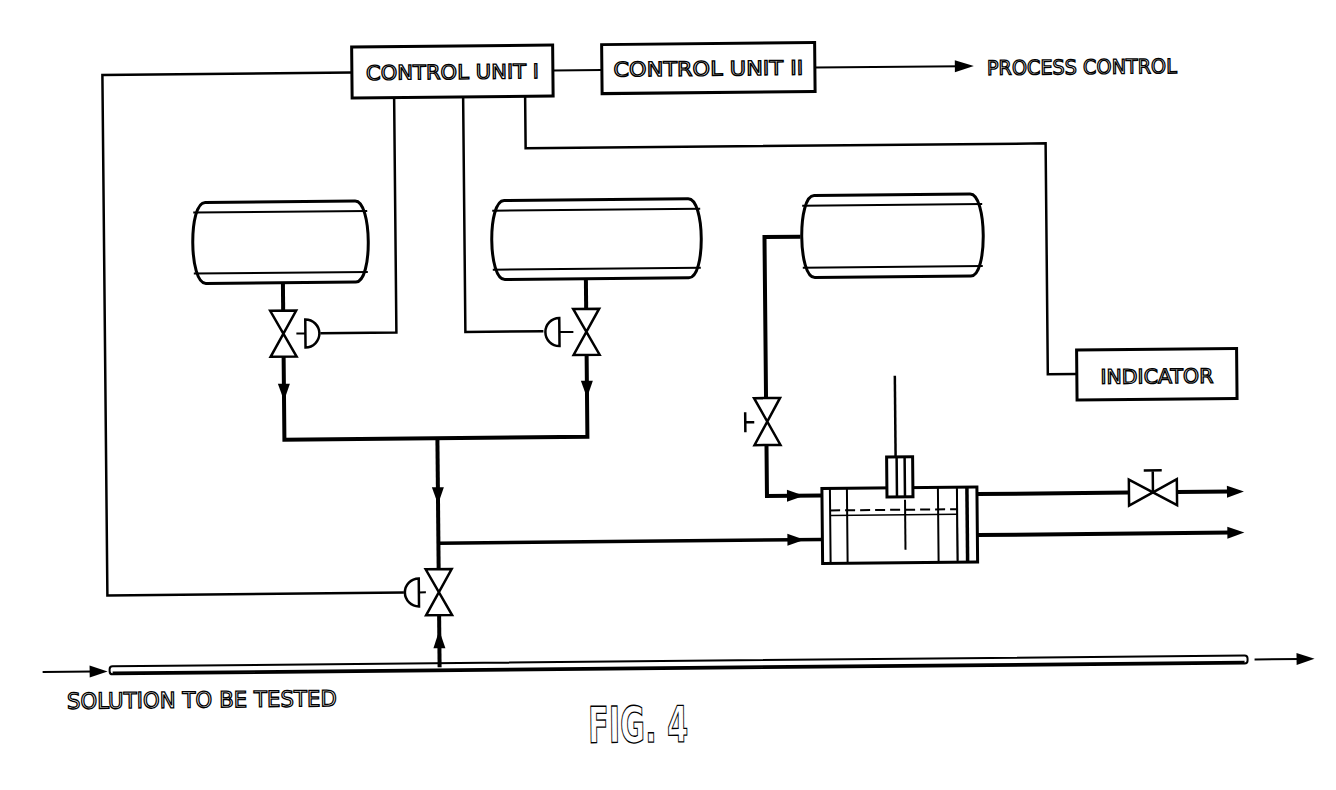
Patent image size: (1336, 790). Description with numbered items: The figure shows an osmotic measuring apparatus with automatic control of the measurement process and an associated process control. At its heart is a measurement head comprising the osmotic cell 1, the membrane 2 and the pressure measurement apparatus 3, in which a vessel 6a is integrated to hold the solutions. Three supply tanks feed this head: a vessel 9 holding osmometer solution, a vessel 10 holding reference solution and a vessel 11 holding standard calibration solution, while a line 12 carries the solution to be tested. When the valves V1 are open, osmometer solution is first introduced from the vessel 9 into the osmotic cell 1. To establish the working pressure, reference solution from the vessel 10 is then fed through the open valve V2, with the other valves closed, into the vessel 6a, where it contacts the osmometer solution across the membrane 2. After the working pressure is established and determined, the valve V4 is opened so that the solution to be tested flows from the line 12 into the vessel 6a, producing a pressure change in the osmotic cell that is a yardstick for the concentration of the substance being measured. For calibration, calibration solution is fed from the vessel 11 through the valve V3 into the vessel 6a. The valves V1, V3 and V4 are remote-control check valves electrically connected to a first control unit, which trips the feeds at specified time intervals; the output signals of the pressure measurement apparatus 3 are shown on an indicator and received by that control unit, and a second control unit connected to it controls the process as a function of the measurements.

The osmotic cell 1 is at (920, 498).
The membrane 2 is at (958, 478).
The pressure measurement apparatus 3 is at (910, 462).
The vessel 6a is at (922, 552).
The vessel 9 is at (900, 209).
The vessel 10 is at (624, 211).
The vessel 11 is at (288, 207).
The line 12 is at (1088, 664).
The valve V1 is at (777, 406).
The valve V2 is at (598, 312).
The valve V3 is at (276, 312).
The valve V4 is at (445, 570).